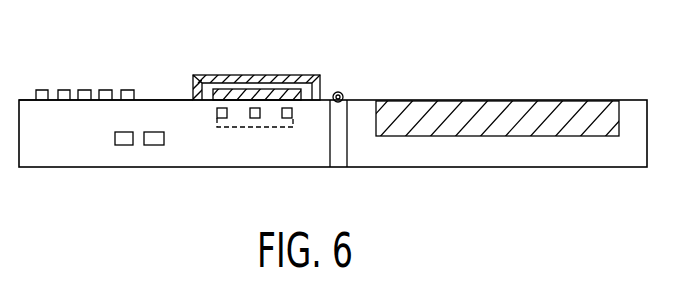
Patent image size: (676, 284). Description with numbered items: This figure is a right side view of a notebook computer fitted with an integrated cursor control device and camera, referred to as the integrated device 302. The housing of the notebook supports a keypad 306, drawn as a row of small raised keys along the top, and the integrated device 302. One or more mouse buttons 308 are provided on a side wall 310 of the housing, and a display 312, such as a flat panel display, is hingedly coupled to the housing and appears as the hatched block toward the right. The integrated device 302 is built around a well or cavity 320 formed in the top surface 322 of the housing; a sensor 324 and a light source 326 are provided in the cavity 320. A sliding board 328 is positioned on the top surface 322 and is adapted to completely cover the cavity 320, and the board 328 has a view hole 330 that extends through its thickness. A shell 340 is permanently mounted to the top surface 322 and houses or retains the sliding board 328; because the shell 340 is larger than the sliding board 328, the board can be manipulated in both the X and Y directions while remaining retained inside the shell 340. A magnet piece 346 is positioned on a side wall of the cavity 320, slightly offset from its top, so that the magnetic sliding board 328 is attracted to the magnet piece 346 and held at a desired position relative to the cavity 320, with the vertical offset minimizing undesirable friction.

The integrated cursor control device and camera 302 is at (292, 67).
The keypad 306 is at (64, 90).
The mouse buttons 308 is at (117, 140).
The side wall 310 is at (78, 145).
The display 312 is at (500, 107).
The cavity 320 is at (270, 127).
The top surface 322 is at (163, 100).
The sensor 324 is at (250, 118).
The light source 326 is at (292, 118).
The sliding board 328 is at (230, 83).
The view hole 330 is at (261, 90).
The shell 340 is at (322, 88).
The magnet piece 346 is at (217, 118).